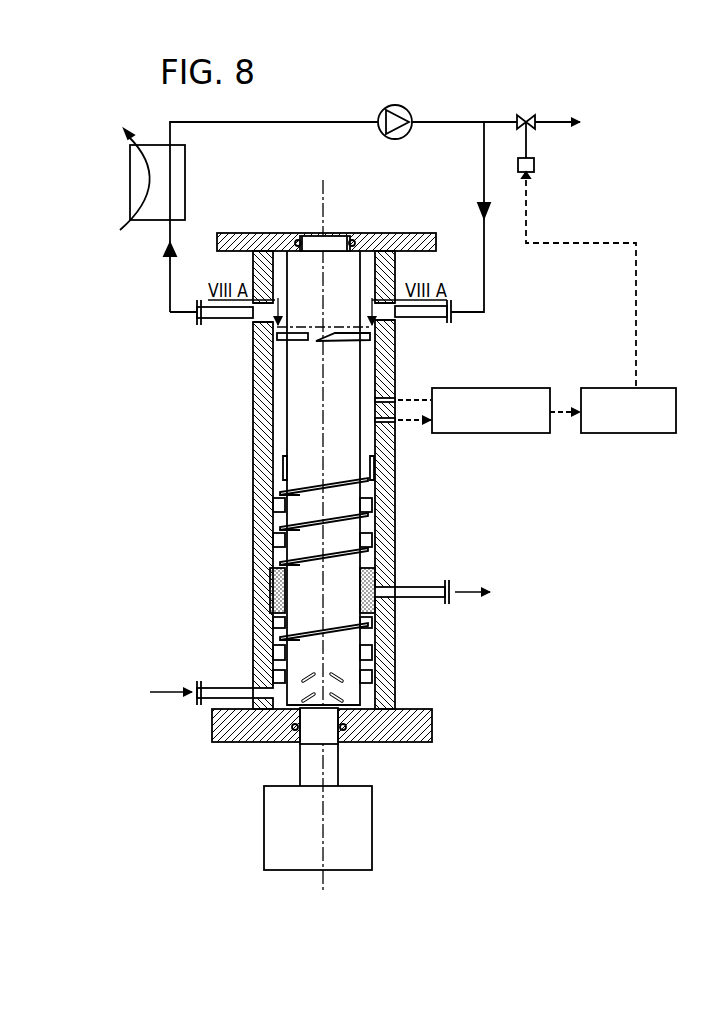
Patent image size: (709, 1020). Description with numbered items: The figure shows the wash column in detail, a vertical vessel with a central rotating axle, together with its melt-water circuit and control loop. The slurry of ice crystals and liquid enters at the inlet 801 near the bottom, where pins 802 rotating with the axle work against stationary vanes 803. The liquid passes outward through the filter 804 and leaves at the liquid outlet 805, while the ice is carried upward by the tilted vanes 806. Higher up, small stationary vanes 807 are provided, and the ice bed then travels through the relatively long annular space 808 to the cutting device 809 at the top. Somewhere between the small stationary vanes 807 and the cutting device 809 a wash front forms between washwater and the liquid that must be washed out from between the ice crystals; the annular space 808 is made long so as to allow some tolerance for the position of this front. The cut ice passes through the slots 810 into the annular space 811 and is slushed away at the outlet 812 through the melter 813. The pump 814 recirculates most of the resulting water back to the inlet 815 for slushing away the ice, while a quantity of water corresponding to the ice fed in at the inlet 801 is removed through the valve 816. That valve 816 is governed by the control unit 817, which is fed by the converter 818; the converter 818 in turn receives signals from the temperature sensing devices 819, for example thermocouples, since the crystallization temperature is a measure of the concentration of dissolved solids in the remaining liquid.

The slurry inlet 801 is at (213, 695).
The pins 802 is at (273, 690).
The stationary vanes 803 is at (366, 682).
The filter 804 is at (270, 587).
The liquid outlet 805 is at (425, 598).
The tilted vanes 806 is at (285, 540).
The small stationary vanes 807 is at (281, 463).
The annular space 808 is at (278, 389).
The cutting device 809 is at (345, 342).
The slots 810 is at (315, 339).
The annular space 811 is at (282, 268).
The slushing outlet 812 is at (225, 318).
The melter 813 is at (133, 181).
The pump 814 is at (406, 112).
The recirculation inlet 815 is at (422, 318).
The valve 816 is at (526, 115).
The control unit 817 is at (601, 397).
The converter 818 is at (483, 400).
The temperature sensing devices 819 is at (398, 424).